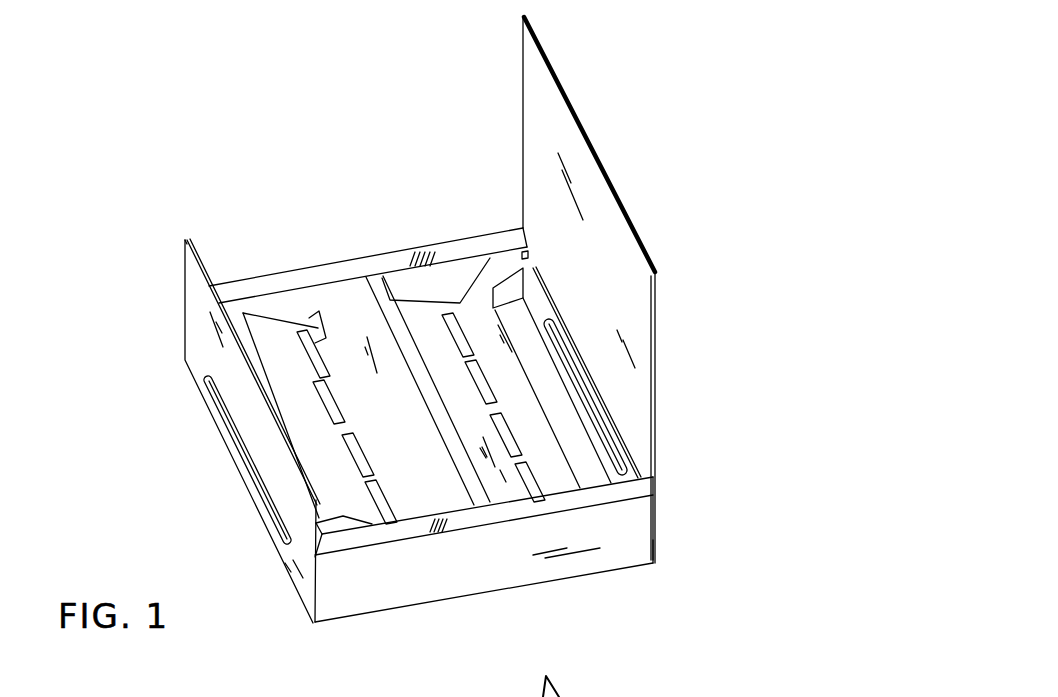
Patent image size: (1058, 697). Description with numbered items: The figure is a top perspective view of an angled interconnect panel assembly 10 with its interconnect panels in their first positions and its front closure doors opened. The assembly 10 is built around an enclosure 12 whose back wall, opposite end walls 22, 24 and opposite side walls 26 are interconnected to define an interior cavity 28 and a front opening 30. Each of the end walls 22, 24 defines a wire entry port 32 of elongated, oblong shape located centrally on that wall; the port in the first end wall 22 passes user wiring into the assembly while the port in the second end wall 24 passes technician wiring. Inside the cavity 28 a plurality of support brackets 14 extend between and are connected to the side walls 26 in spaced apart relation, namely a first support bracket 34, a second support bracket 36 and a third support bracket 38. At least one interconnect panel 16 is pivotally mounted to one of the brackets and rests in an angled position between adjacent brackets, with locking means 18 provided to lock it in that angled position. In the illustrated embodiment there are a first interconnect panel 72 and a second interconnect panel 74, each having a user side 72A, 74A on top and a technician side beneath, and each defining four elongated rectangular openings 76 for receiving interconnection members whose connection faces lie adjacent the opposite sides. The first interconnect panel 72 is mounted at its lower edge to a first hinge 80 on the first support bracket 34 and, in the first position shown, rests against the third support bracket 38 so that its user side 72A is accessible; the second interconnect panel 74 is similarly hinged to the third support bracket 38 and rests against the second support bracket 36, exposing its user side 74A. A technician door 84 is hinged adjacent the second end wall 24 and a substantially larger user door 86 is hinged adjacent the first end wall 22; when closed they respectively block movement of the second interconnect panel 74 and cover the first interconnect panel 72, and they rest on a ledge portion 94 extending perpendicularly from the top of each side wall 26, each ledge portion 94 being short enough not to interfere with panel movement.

The angled interconnect panel assembly 10 is at (226, 183).
The enclosure 12 is at (660, 521).
The support brackets 14 is at (285, 336).
The interconnect panel 16 is at (381, 532).
The locking means 18 is at (465, 400).
The first end wall 22 is at (632, 470).
The second end wall 24 is at (288, 557).
The side walls 26 is at (688, 574).
The interior cavity 28 is at (395, 290).
The front opening 30 is at (326, 548).
The wire entry ports 32 is at (560, 343).
The first support bracket 34 is at (505, 262).
The second support bracket 36 is at (335, 514).
The third support bracket 38 is at (383, 421).
The first interconnect panel 72 is at (499, 485).
The user side of the first interconnect panel 72A is at (440, 440).
The second interconnect panel 74 is at (283, 300).
The user side of the second interconnect panel 74A is at (263, 327).
The openings 76 is at (308, 412).
The first hinge 80 is at (597, 370).
The technician door 84 is at (188, 274).
The user door 86 is at (613, 183).
The ledge portion 94 is at (468, 425).